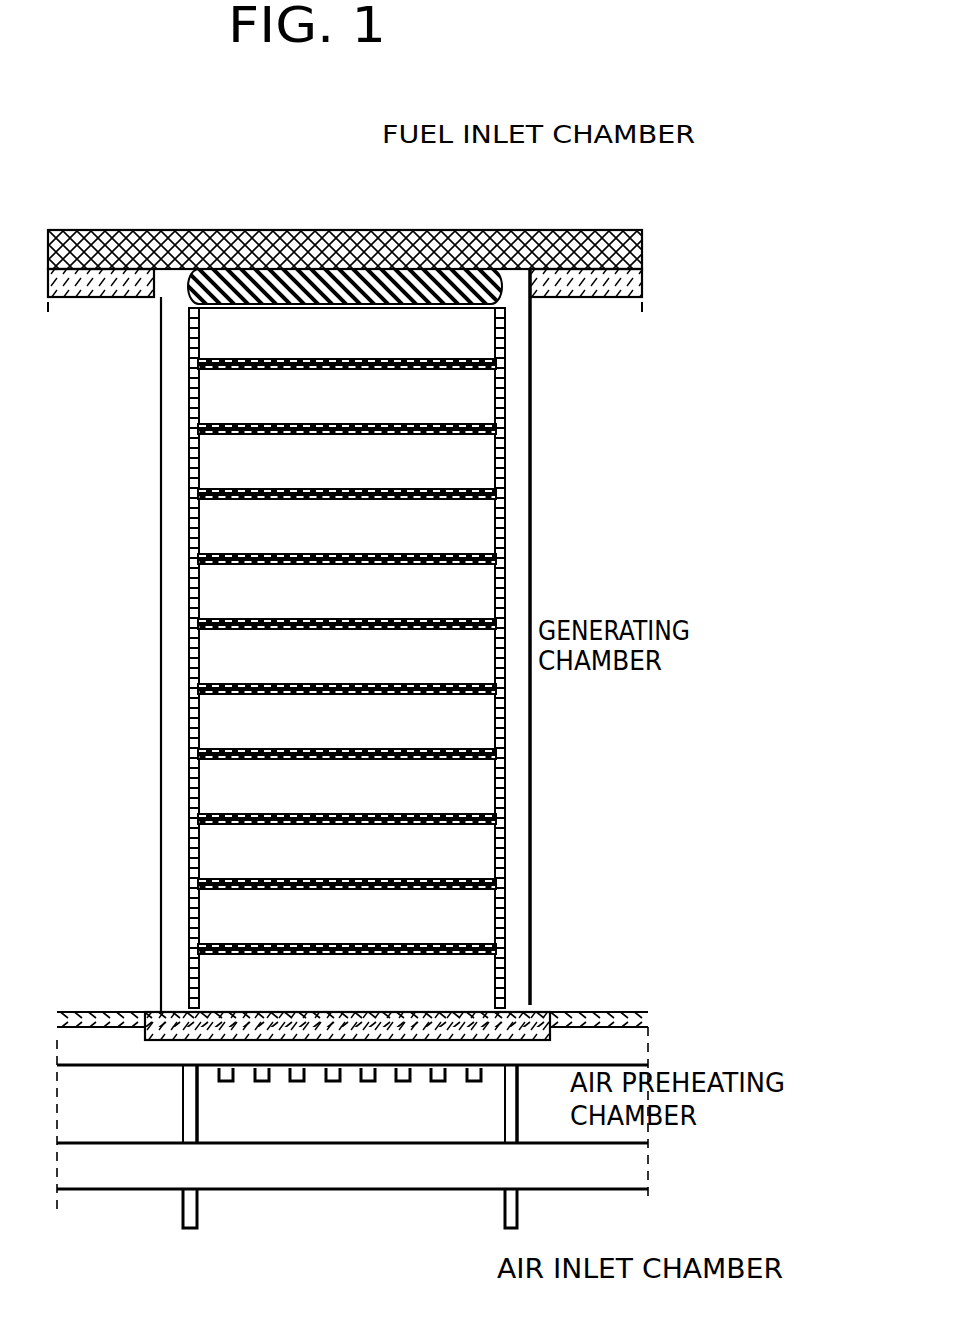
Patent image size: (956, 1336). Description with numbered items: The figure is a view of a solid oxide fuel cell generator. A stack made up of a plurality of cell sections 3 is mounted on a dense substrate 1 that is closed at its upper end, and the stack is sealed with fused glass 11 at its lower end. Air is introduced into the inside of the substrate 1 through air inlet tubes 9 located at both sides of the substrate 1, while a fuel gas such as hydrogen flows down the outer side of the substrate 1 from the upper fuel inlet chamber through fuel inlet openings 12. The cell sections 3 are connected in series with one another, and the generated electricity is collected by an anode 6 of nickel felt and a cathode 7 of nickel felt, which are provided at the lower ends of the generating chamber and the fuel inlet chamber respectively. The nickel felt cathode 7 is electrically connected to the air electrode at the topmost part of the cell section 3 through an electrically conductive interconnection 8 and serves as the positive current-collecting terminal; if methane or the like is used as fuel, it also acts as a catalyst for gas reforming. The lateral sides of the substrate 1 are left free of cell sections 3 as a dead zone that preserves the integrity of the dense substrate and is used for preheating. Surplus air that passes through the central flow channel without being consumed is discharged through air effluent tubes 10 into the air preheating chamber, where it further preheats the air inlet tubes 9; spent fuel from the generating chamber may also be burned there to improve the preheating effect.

The dense substrate 1 is at (520, 783).
The cell section 3 is at (480, 850).
The anode 6 is at (555, 1020).
The cathode 7 is at (598, 238).
The electrically conductive interconnection 8 is at (500, 293).
The air inlet tube 9 is at (200, 1215).
The air effluent tube 10 is at (222, 1085).
The fused glass 11 is at (157, 1025).
The fuel inlet opening 12 is at (157, 298).